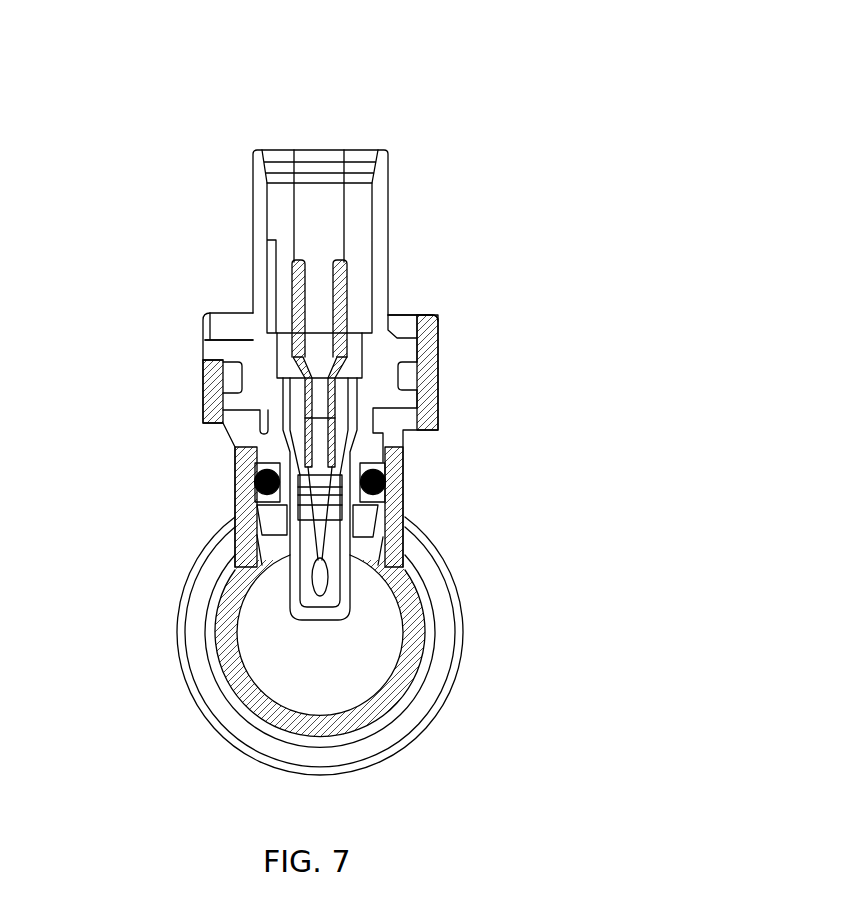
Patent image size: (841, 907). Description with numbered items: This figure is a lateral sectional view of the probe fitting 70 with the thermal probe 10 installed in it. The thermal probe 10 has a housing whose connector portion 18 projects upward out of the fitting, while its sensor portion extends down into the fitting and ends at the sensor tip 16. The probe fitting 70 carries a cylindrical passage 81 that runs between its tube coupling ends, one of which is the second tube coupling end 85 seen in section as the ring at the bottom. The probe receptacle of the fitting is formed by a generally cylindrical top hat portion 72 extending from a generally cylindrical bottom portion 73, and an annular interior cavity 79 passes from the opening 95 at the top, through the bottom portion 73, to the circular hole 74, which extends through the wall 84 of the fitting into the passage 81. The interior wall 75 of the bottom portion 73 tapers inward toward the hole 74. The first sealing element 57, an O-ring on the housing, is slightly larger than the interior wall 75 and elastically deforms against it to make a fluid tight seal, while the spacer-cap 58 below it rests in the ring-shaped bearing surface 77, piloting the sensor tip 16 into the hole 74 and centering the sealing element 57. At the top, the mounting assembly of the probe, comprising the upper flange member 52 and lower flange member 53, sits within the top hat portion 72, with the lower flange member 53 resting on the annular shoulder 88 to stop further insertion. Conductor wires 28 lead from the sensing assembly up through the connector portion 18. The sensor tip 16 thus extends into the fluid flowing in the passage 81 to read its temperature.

The thermal probe 10 is at (383, 122).
The sensor tip 16 is at (347, 608).
The connector portion 18 is at (398, 212).
The conductor wires 28 is at (319, 150).
The upper flange member 52 is at (435, 318).
The lower flange member 53 is at (238, 400).
The first sealing element 57 is at (390, 493).
The spacer-cap 58 is at (370, 513).
The probe fitting 70 is at (133, 342).
The top hat portion 72 is at (440, 377).
The bottom portion 73 is at (405, 487).
The circular hole 74 is at (287, 553).
The interior wall 75 is at (383, 462).
The ring-shaped bearing surface 77 is at (267, 533).
The interior cavity 79 is at (400, 330).
The cylindrical passage 81 is at (348, 667).
The wall 84 is at (377, 567).
The second tube coupling end 85 is at (218, 682).
The annular shoulder 88 is at (213, 426).
The opening 95 is at (240, 313).